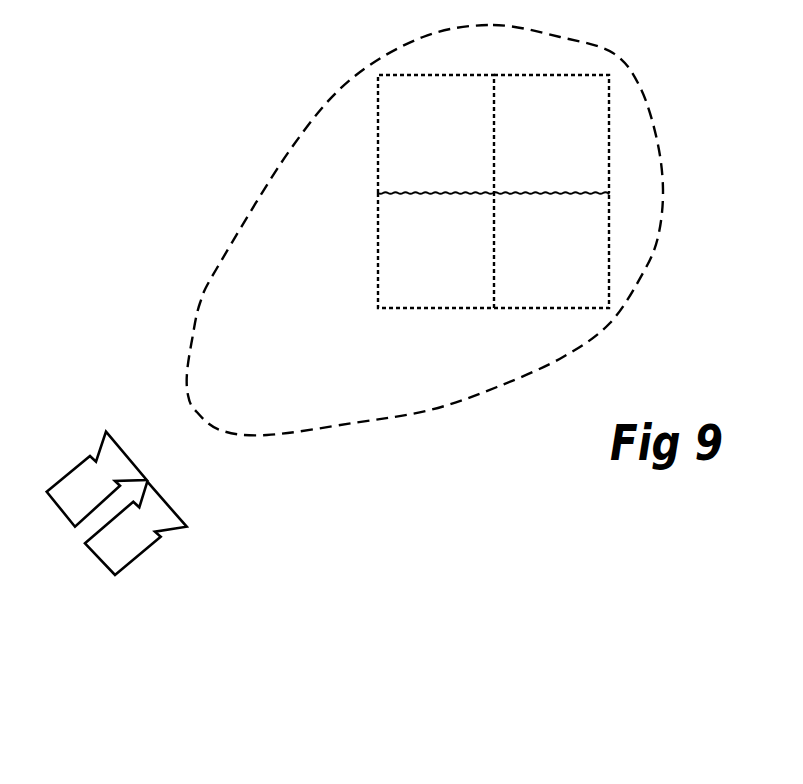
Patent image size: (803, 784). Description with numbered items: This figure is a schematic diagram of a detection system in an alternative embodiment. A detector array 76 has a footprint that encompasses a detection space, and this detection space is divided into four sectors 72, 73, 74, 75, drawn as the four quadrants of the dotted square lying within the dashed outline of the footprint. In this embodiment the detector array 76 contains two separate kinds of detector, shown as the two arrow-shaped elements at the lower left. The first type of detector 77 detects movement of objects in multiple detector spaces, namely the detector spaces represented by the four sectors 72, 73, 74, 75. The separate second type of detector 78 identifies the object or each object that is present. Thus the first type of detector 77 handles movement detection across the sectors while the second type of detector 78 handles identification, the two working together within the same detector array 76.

The sector 72 is at (433, 137).
The sector 73 is at (422, 254).
The sector 74 is at (558, 123).
The sector 75 is at (556, 253).
The detector array 76 is at (490, 387).
The first type of detector 77 is at (88, 485).
The second type of detector 78 is at (143, 528).